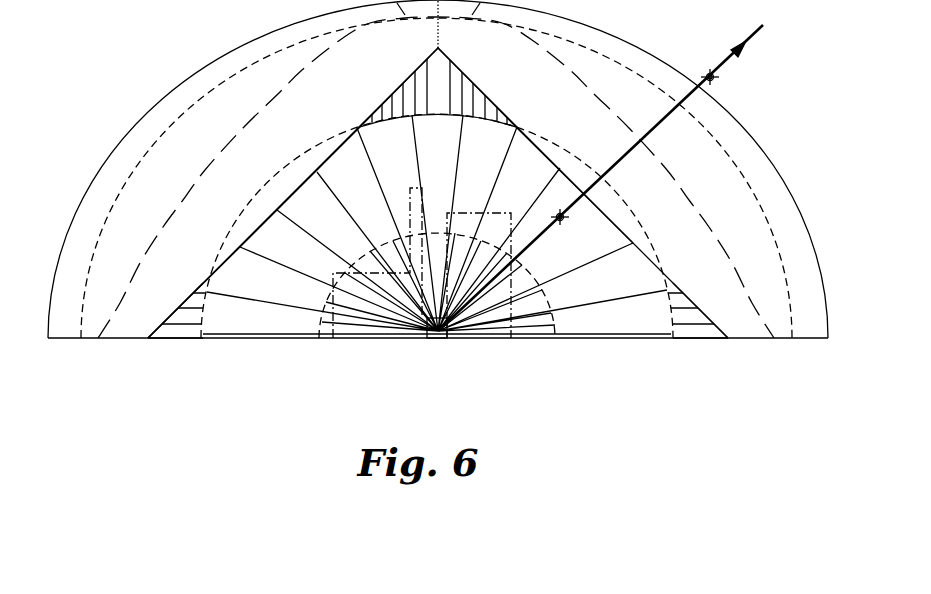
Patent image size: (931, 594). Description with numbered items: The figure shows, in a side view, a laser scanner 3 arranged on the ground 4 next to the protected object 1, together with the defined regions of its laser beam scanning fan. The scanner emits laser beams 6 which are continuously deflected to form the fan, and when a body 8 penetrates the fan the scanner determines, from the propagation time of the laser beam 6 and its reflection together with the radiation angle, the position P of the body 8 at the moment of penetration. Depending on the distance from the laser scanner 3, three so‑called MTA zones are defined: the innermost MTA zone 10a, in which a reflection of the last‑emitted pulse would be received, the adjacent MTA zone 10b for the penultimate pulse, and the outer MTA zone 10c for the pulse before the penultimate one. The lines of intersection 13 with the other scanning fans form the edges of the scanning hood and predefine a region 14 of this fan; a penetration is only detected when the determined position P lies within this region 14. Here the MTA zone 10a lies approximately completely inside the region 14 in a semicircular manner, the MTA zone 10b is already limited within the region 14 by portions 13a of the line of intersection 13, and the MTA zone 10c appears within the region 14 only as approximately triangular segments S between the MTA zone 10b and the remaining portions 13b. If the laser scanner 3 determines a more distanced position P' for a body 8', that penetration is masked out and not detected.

The object 1 is at (473, 202).
The laser scanner 3 is at (440, 337).
The ground 4 is at (288, 340).
The laser beam 6 is at (752, 37).
The body 8 is at (559, 204).
The body 8' is at (700, 47).
The MTA zone 0 10a is at (547, 332).
The MTA zone 1 10b is at (642, 330).
The MTA zone 2 10c is at (760, 330).
The line of intersection 13 is at (320, 84).
The portion of the line of intersection 13a is at (307, 182).
The remaining portion of the line of intersection 13b is at (388, 97).
The region 14 is at (240, 248).
The triangular segment S is at (455, 75).
The position P is at (576, 236).
The more distanced position P' is at (745, 87).